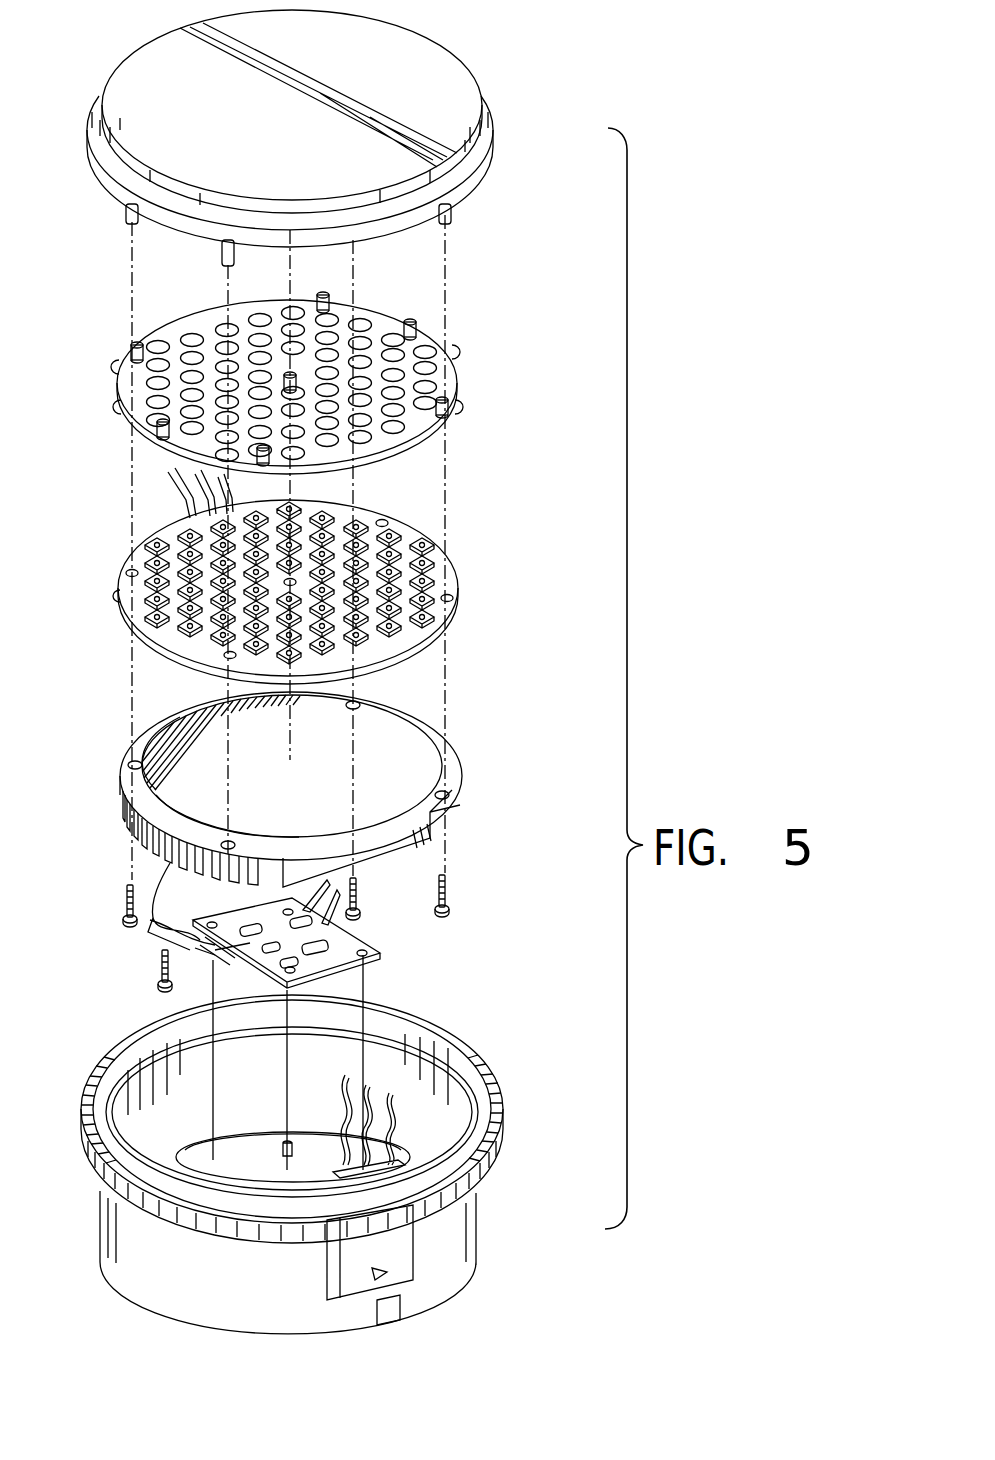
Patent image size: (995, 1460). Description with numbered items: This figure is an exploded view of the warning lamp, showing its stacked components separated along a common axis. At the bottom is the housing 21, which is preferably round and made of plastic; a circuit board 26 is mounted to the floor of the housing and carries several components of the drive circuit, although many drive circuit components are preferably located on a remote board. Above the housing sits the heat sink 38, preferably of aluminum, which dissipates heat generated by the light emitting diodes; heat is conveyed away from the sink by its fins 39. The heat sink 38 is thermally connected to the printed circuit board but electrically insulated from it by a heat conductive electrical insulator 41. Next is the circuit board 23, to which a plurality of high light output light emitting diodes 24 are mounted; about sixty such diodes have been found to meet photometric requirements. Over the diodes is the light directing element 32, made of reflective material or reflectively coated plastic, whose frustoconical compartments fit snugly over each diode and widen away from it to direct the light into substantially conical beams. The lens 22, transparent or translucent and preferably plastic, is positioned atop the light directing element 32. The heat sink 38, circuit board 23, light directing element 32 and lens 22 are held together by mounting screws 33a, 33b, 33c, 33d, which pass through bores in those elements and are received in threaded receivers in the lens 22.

The housing 21 is at (485, 1245).
The lens 22 is at (437, 50).
The circuit board 23 is at (452, 587).
The light emitting diodes 24 is at (420, 546).
The circuit board 26 is at (383, 957).
The light directing element 32 is at (450, 372).
The mounting screw 33a is at (123, 897).
The mounting screw 33b is at (158, 968).
The mounting screw 33c is at (393, 911).
The mounting screw 33d is at (448, 890).
The heat sink 38 is at (120, 780).
The fins 39 is at (150, 920).
The heat conductive electrical insulator 41 is at (365, 737).